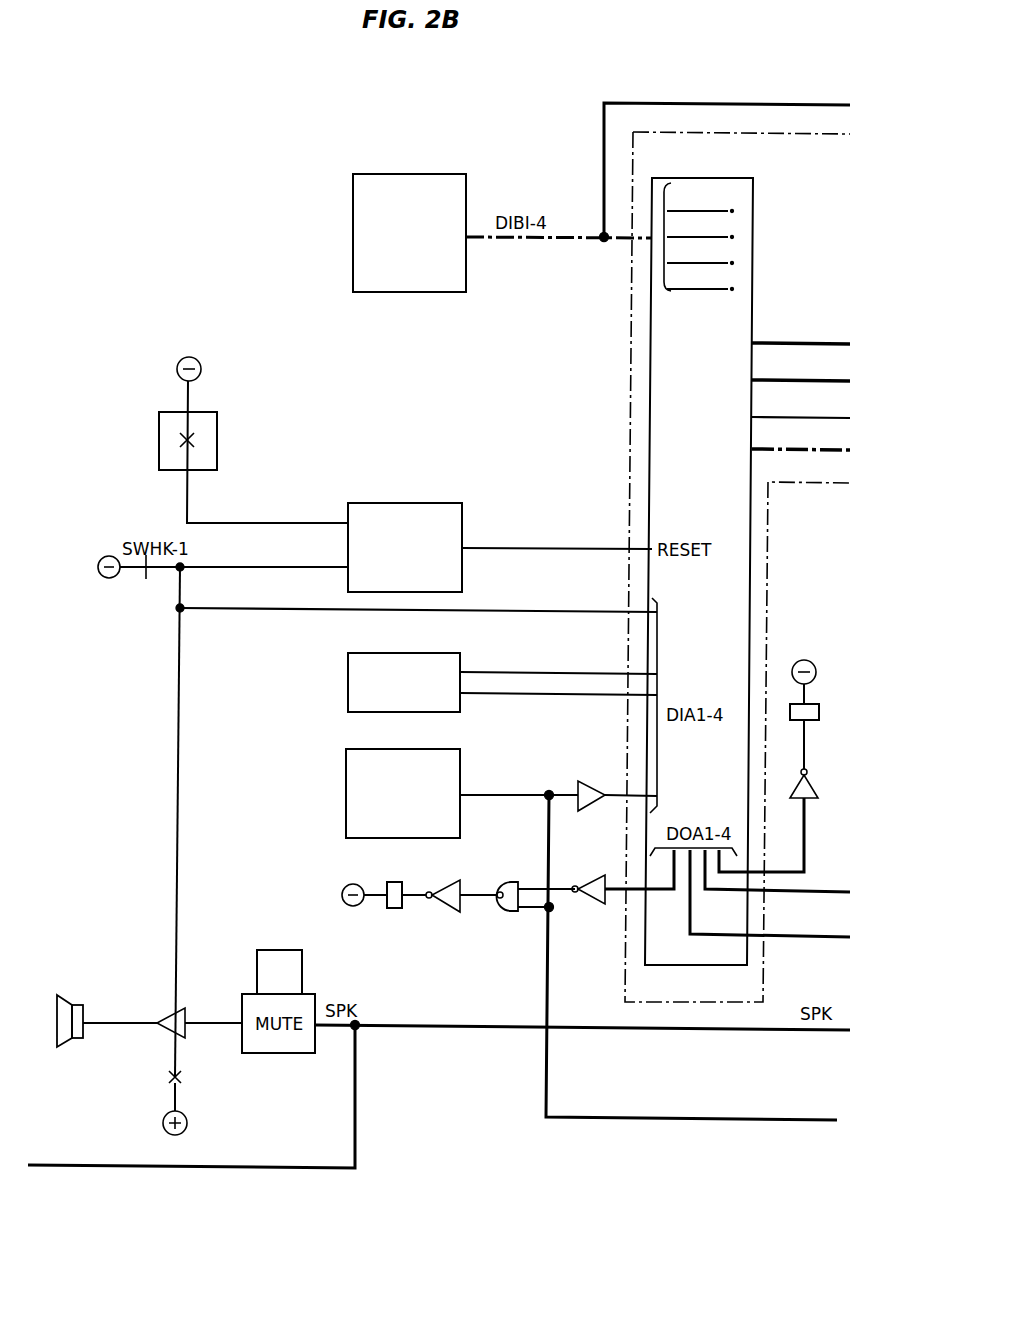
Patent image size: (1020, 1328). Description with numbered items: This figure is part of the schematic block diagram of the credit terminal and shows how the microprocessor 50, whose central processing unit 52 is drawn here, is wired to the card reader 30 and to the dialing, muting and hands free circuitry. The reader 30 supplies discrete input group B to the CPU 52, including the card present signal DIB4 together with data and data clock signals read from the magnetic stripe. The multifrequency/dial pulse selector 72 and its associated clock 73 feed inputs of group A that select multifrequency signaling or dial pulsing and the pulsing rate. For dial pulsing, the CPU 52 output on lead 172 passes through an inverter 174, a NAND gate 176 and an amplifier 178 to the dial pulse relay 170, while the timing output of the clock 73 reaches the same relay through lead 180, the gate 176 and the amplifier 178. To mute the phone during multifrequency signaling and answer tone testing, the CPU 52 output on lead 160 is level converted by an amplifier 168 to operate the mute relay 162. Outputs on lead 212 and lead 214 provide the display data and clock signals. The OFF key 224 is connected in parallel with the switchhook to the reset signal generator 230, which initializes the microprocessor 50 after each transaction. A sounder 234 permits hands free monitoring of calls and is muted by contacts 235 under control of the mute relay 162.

The reader 30 is at (408, 176).
The microprocessor 50 is at (638, 332).
The central processing unit 52 is at (753, 262).
The multifrequency/dial pulse selector 72 is at (348, 685).
The multifrequency-dial pulse clock 73 is at (346, 790).
The lead 160 is at (762, 835).
The mute relay 162 is at (815, 714).
The amplifier 168 is at (815, 798).
The dial pulse relay 170 is at (384, 899).
The lead 172 is at (615, 900).
The inverter 174 is at (592, 877).
The NAND gate 176 is at (536, 885).
The amplifier 178 is at (461, 884).
The lead 180 is at (549, 831).
The lead 212 is at (812, 944).
The lead 214 is at (812, 892).
The OFF key 224 is at (218, 428).
The reset signal generator 230 is at (462, 518).
The sounder 234 is at (107, 1011).
The contacts 235 is at (279, 958).